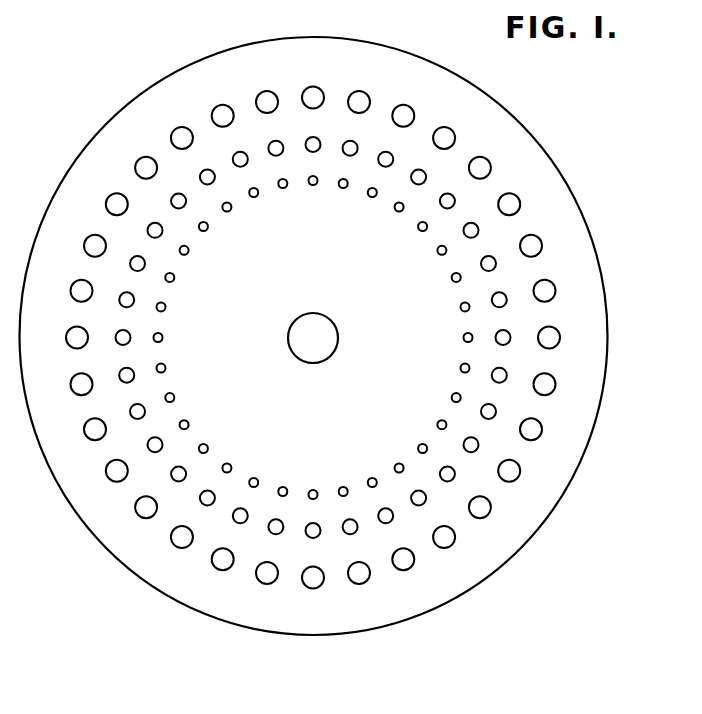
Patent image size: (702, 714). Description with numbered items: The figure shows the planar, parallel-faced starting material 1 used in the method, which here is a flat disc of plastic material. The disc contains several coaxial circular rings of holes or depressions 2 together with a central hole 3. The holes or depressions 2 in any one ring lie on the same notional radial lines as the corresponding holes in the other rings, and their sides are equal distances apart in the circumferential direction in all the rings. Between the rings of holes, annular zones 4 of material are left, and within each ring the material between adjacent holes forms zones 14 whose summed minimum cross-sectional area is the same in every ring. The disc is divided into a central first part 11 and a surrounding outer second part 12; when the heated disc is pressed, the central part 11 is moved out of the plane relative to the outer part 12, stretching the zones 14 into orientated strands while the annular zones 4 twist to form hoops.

The starting material 1 is at (530, 548).
The holes or depressions 2 is at (345, 492).
The central hole 3 is at (334, 343).
The annular zones 4 is at (232, 490).
The central (first) part 11 is at (393, 275).
The outer (second) part 12 is at (97, 163).
The zones between adjacent holes 14 is at (268, 190).